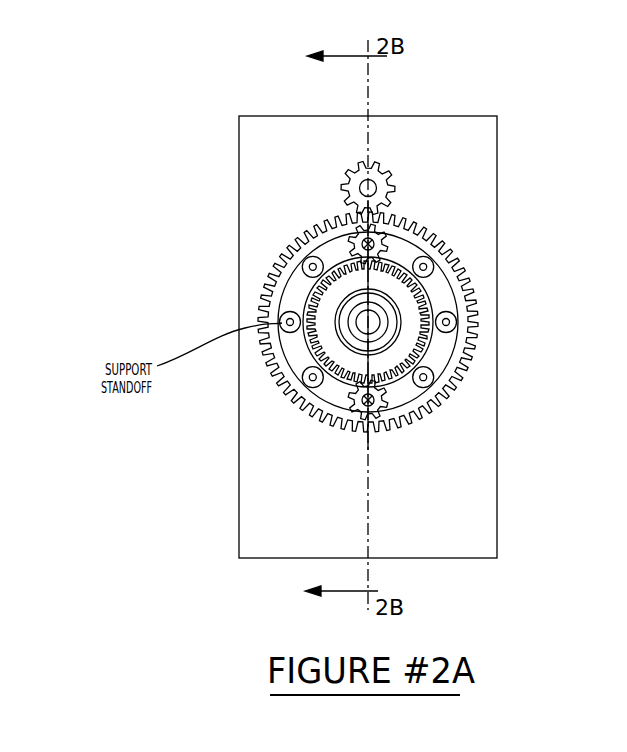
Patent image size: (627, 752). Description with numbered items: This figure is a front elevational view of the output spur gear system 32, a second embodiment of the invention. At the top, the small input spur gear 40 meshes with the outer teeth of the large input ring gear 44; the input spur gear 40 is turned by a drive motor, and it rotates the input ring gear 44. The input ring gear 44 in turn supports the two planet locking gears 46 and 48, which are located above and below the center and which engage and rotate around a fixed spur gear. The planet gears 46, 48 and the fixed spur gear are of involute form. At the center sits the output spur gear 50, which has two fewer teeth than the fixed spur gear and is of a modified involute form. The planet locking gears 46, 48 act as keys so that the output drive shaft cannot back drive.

The output spur gear system 32 is at (168, 112).
The input spur gear 40 is at (385, 180).
The input ring gear 44 is at (447, 402).
The planet locking gear 46 is at (356, 401).
The planet locking gear 48 is at (386, 246).
The output spur gear 50 is at (328, 300).